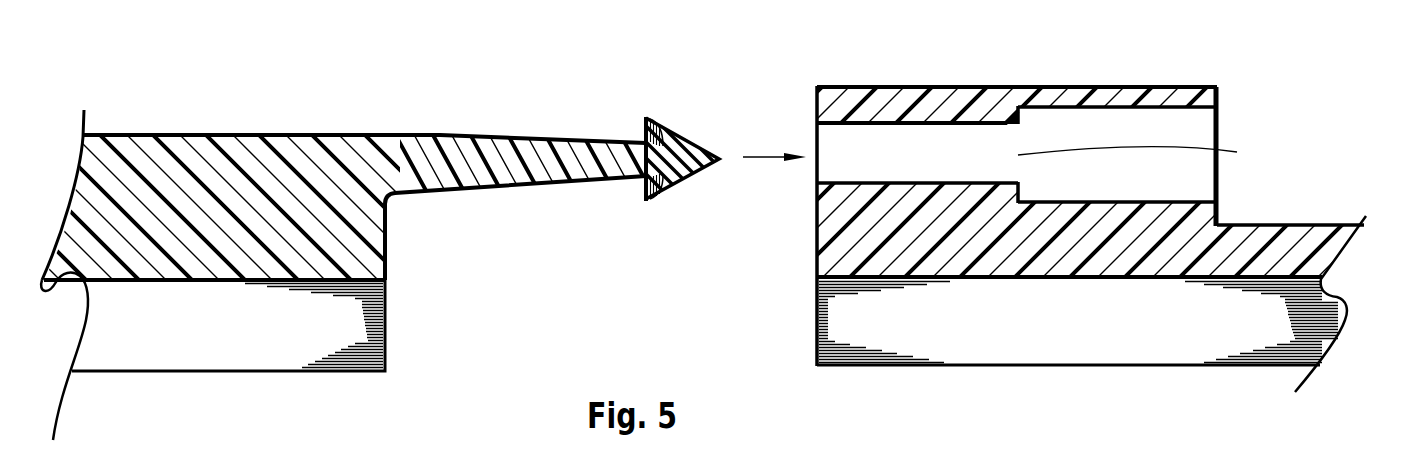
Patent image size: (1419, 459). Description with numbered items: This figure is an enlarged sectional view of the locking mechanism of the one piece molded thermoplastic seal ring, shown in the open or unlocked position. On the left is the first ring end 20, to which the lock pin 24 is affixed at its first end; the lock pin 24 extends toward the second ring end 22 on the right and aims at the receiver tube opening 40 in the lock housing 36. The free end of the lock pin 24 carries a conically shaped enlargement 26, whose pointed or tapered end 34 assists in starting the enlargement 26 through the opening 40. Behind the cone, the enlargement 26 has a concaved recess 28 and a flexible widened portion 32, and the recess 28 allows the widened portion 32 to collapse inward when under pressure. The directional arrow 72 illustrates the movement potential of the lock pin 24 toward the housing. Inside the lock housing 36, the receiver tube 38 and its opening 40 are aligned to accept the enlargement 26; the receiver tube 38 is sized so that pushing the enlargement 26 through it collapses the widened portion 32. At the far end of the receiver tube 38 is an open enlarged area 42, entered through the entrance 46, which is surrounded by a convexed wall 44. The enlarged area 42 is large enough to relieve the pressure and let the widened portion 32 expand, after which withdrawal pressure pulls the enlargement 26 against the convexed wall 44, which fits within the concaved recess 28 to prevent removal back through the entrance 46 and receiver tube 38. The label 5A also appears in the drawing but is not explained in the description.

The first ring end 20 is at (387, 317).
The second ring end 22 is at (853, 367).
The lock pin 24 is at (426, 133).
The conically shaped enlargement 26 is at (669, 132).
The concaved recess 28 is at (646, 136).
The flexible widened portion 32 is at (648, 120).
The pointed or tapered end 34 is at (721, 154).
The lock housing 36 is at (892, 86).
The receiver tube 38 is at (870, 162).
The receiver tube opening 40 is at (815, 172).
The enlarged area 42 is at (1180, 143).
The convexed wall 44 is at (1016, 117).
The entrance 46 is at (1154, 147).
The directional arrows 72 is at (762, 157).
The engagement surface 5A is at (142, 134).